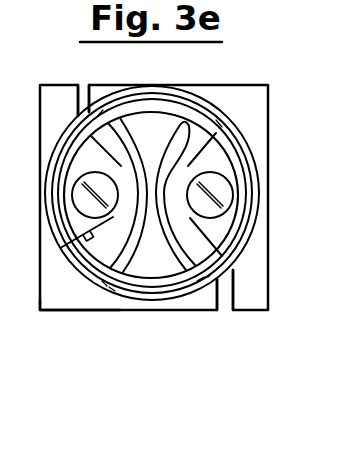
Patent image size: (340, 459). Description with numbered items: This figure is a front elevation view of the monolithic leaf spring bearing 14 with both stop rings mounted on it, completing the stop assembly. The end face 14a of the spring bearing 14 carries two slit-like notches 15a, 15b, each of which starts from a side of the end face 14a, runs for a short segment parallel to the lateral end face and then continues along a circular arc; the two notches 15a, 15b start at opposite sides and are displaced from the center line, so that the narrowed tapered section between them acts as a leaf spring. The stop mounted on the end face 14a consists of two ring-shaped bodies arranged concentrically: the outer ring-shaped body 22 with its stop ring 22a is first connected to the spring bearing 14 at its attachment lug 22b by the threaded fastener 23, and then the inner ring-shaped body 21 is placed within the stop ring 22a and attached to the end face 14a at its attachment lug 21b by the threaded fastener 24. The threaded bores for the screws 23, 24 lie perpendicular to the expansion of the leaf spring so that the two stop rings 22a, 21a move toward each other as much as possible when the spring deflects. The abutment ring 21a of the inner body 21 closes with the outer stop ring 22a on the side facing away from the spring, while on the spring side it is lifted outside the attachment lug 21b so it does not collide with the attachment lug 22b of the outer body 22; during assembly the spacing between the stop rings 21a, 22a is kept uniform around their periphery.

The spring bearing 14 is at (64, 66).
The end face 14a is at (62, 293).
The notch 15a is at (226, 303).
The notch 15b is at (82, 98).
The inner ring-shaped body 21 is at (120, 276).
The abutment ring 21a is at (235, 229).
The attachment lug 21b is at (84, 235).
The outer ring-shaped body 22 is at (152, 298).
The stop ring 22a is at (155, 99).
The attachment lug 22b is at (218, 168).
The threaded fastener 23 is at (233, 193).
The threaded fastener 24 is at (84, 199).